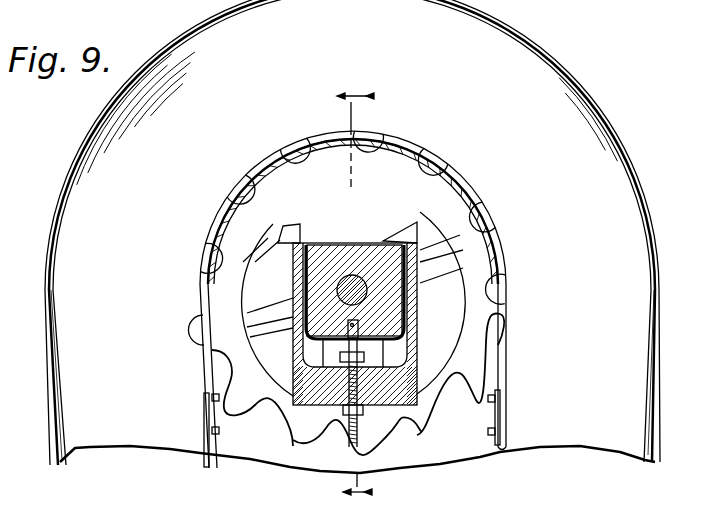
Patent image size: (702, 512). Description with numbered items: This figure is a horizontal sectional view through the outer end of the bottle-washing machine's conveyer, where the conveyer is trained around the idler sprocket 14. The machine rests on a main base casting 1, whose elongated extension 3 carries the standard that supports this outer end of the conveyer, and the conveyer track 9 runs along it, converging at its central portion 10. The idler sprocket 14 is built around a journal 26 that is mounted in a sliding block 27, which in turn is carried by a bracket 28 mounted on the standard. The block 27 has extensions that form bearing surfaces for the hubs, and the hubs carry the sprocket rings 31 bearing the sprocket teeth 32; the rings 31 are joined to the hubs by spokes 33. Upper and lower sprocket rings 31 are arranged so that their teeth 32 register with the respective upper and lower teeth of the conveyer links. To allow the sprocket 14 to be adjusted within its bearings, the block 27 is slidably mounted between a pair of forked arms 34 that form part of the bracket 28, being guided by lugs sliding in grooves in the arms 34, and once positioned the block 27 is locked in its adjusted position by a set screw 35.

The main base casting 1 is at (352, 232).
The elongated extension 3 is at (132, 446).
The conveyer track 9 is at (503, 426).
The converging central portion 10 is at (354, 290).
The idler sprocket 14 is at (528, 503).
The journal 26 is at (362, 296).
The sliding block 27 is at (392, 328).
The bracket 28 is at (404, 403).
The sprocket rings 31 is at (458, 347).
The sprocket teeth 32 is at (486, 196).
The spokes 33 is at (267, 308).
The forked arms 34 is at (425, 285).
The set screw 35 is at (352, 448).